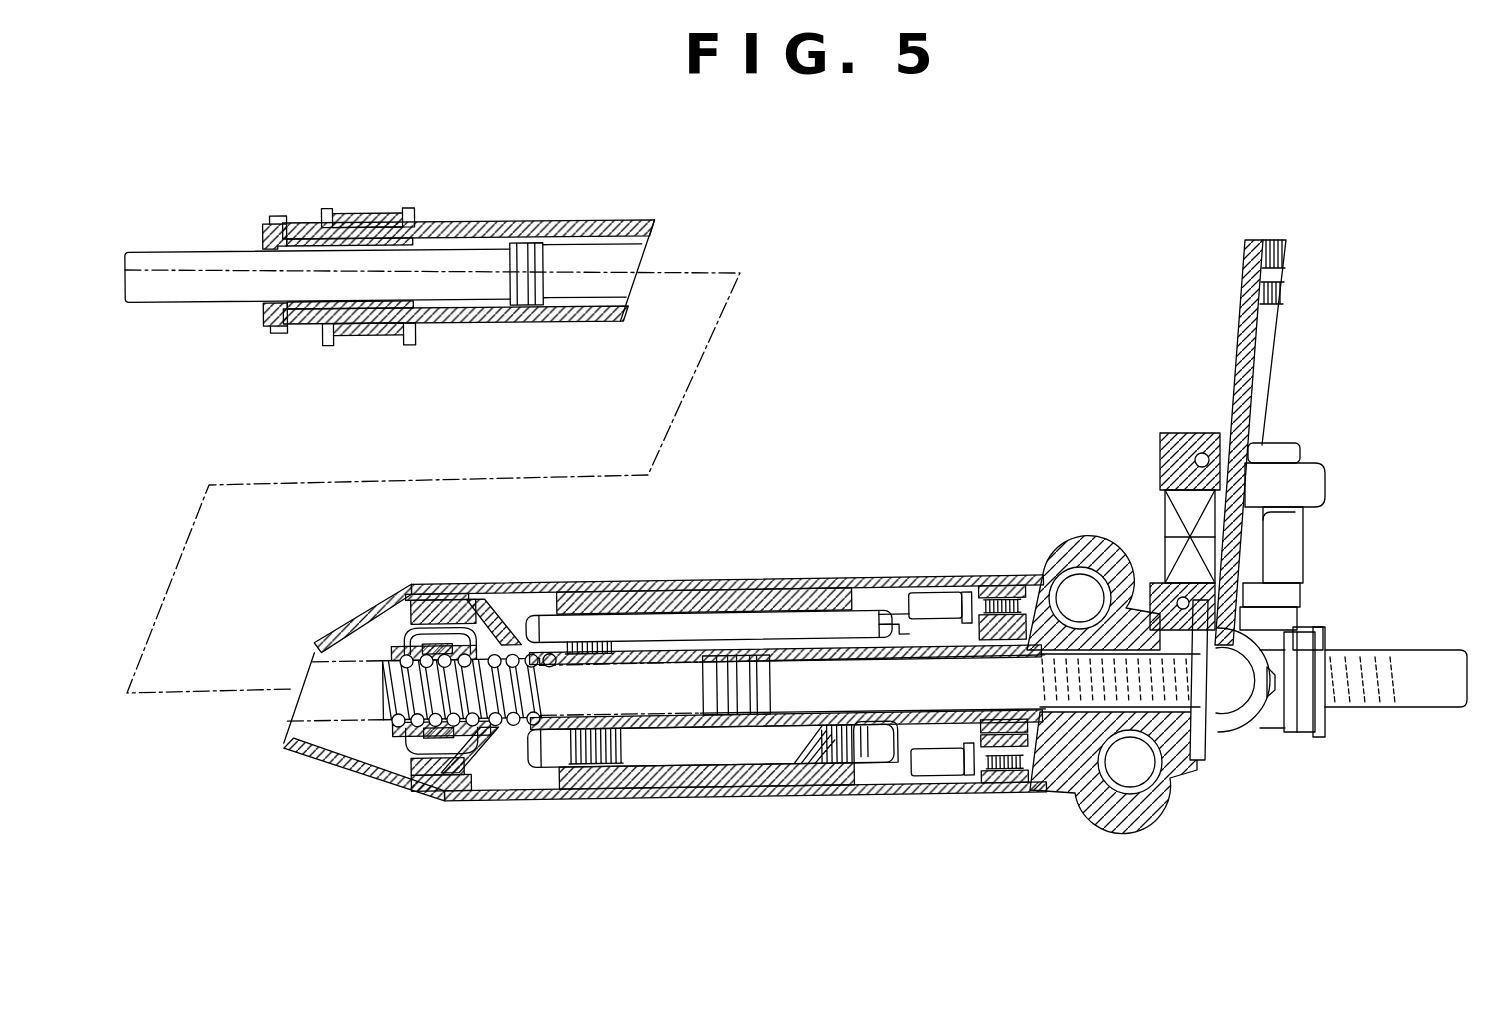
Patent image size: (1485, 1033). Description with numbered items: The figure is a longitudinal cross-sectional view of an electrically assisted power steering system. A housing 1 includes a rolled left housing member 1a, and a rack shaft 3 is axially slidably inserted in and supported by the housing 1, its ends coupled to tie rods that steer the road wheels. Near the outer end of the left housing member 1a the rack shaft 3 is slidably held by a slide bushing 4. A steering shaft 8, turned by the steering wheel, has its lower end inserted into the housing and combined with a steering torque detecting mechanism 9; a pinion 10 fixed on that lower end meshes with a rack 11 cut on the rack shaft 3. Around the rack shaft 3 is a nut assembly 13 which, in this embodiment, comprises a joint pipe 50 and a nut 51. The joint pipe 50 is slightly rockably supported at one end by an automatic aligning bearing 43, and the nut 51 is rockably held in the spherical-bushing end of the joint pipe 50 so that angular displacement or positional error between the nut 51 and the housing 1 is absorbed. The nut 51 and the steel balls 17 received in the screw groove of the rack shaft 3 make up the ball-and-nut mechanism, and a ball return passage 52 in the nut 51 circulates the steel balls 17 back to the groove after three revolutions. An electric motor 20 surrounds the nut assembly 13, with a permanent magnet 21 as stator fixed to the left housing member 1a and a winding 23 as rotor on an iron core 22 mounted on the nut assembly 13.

The housing 1 is at (942, 540).
The left housing member 1a is at (600, 222).
The rack shaft 3 is at (478, 257).
The slide bushing 4 is at (305, 228).
The steering shaft 8 is at (1265, 375).
The steering torque detecting mechanism 9 is at (1185, 433).
The pinion 10 is at (1214, 688).
The rack 11 is at (1168, 688).
The nut assembly 13 is at (627, 727).
The steel balls 17 is at (398, 602).
The electric motor 20 is at (795, 630).
The permanent magnet 21 is at (672, 594).
The iron core 22 is at (876, 746).
The winding 23 is at (717, 742).
The automatic aligning bearing 43 is at (1020, 583).
The joint pipe 50 is at (611, 605).
The nut 51 is at (447, 772).
The ball return passage 52 is at (445, 592).